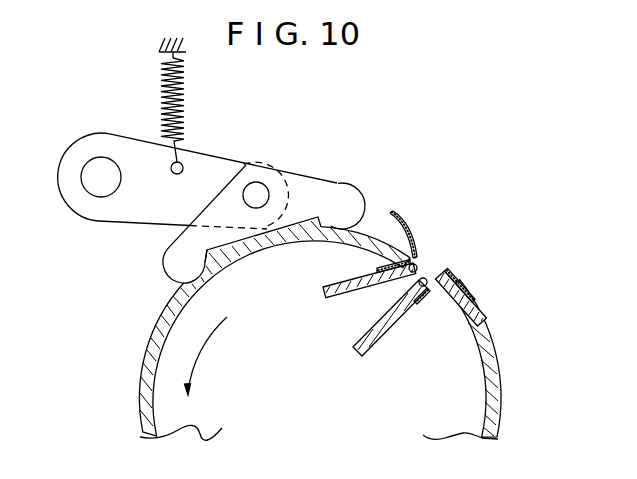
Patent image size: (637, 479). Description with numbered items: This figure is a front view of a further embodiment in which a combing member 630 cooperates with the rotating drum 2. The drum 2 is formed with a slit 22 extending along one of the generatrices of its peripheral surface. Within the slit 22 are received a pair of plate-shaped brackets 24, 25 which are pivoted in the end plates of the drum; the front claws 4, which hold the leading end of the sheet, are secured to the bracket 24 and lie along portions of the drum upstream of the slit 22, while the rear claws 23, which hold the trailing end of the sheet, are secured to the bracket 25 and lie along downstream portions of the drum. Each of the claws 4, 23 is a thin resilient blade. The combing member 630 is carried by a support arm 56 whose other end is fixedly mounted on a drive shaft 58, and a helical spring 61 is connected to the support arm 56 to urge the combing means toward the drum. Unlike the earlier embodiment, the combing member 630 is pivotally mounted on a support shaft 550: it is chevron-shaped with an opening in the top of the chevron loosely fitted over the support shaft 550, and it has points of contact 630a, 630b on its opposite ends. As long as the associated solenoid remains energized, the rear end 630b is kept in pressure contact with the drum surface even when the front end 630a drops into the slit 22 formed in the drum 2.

The drum 2 is at (490, 358).
The front claws 4 is at (457, 285).
The slit 22 is at (432, 263).
The rear claws 23 is at (403, 233).
The bracket 24 is at (380, 332).
The bracket 25 is at (340, 298).
The support arm 56 is at (216, 157).
The drive shaft 58 is at (96, 158).
The helical spring 61 is at (185, 99).
The support shaft 550 is at (258, 182).
The combing member 630 is at (338, 188).
The front end 630a is at (332, 238).
The rear end 630b is at (210, 291).